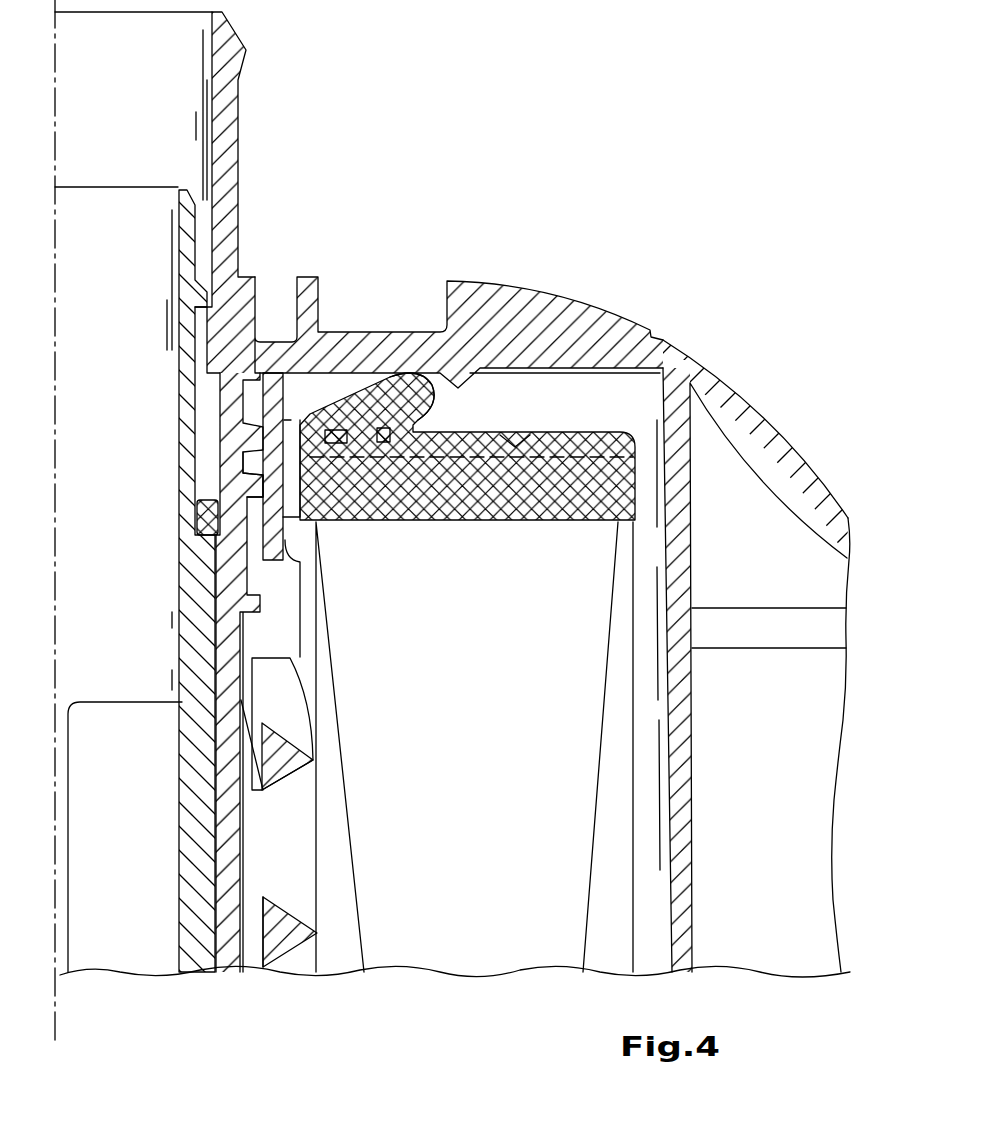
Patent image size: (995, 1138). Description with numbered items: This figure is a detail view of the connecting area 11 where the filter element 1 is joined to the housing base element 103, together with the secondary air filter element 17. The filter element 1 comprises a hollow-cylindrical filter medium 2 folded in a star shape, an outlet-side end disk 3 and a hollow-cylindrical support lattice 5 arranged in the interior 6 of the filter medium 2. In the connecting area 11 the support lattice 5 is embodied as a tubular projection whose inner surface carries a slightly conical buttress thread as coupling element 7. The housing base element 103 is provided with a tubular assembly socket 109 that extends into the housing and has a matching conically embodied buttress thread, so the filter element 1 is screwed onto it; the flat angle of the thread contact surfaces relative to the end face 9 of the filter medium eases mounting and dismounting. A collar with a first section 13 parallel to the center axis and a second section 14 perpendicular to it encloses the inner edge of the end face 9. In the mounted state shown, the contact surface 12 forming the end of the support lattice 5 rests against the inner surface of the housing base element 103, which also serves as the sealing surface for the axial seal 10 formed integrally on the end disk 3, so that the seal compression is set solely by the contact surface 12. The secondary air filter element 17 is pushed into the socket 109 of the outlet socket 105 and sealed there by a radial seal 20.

The filter element 1 is at (652, 550).
The filter medium 2 is at (484, 818).
The outlet-side end disk 3 is at (598, 425).
The support lattice 5 is at (297, 722).
The interior 6 is at (136, 858).
The coupling element 7 is at (235, 467).
The end face 9 is at (516, 437).
The axial seal 10 is at (411, 370).
The connecting area 11 is at (295, 397).
The contact surface 12 is at (267, 372).
The first section 13 is at (328, 495).
The second section 14 is at (386, 462).
The secondary air filter element 17 is at (190, 652).
The radial seal 20 is at (197, 515).
The housing base element 103 is at (568, 343).
The outlet socket 105 is at (254, 120).
The assembly socket 109 is at (242, 436).